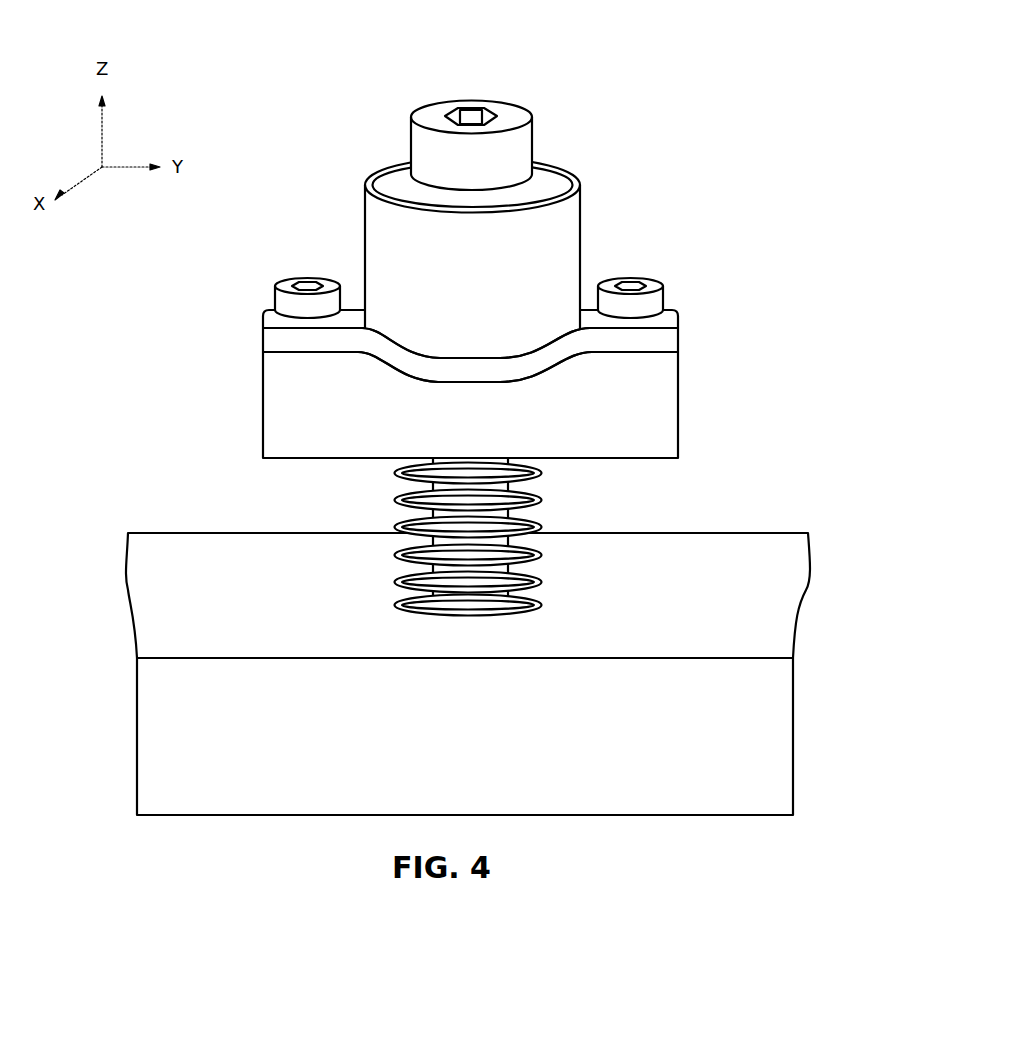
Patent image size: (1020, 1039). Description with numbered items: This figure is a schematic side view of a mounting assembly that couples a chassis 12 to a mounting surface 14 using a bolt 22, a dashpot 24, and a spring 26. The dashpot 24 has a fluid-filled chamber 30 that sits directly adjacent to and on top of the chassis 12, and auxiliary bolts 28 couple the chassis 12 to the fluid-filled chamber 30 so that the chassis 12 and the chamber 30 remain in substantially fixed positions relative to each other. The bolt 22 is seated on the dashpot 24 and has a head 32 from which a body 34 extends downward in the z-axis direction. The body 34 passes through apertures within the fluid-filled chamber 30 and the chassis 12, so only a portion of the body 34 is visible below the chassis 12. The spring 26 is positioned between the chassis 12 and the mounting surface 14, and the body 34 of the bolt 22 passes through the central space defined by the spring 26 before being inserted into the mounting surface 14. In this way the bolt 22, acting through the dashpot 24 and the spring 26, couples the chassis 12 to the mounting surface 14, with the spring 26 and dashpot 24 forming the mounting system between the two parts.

The chassis 12 is at (665, 425).
The mounting surface 14 is at (625, 545).
The bolt 22 is at (493, 234).
The dashpot 24 is at (551, 187).
The spring 26 is at (530, 516).
The auxiliary bolts 28 is at (648, 282).
The fluid-filled chamber 30 is at (565, 255).
The head 32 is at (520, 150).
The body 34 is at (445, 487).